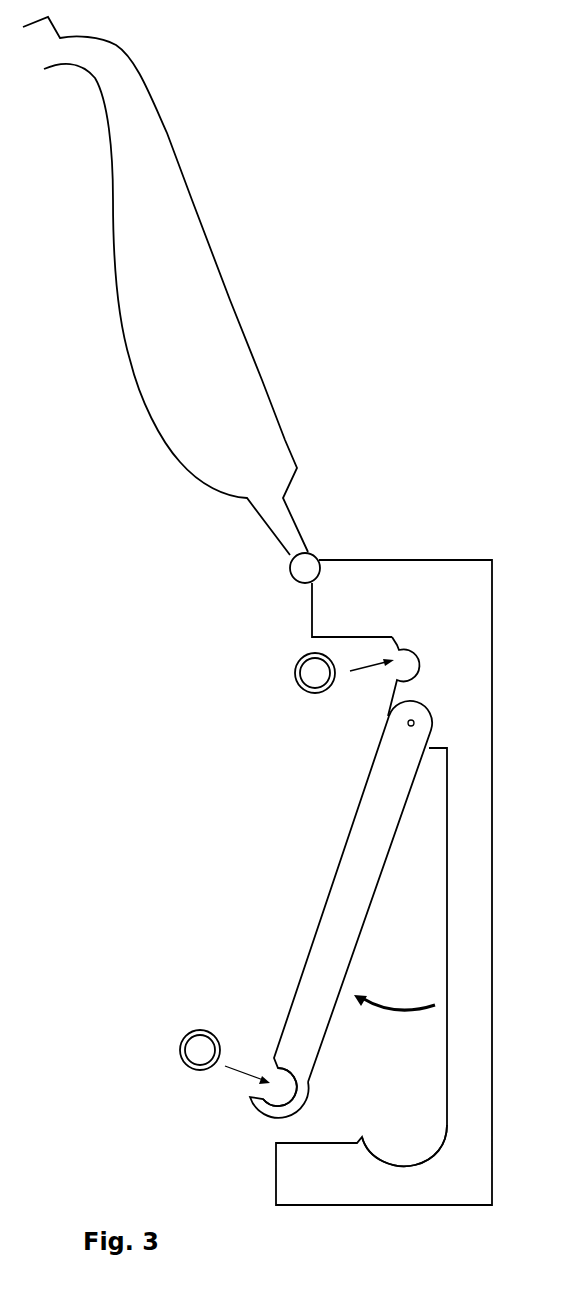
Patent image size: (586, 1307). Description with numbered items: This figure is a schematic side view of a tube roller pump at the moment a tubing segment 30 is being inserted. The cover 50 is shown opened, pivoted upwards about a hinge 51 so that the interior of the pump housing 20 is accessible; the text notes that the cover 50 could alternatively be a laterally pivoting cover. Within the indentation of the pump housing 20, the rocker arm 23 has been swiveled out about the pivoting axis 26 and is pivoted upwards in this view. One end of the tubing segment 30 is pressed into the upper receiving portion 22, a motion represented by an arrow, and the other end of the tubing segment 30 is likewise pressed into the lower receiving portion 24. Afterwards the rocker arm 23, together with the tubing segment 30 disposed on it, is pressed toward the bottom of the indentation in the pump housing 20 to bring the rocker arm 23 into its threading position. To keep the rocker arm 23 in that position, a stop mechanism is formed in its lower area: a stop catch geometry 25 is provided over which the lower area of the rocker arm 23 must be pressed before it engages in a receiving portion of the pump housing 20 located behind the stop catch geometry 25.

The pump housing 20 is at (393, 571).
The upper receiving portion 22 is at (423, 648).
The rocker arm 23 is at (366, 908).
The lower receiving portion 24 is at (297, 1073).
The stop catch geometry 25 is at (370, 1140).
The pivoting axis 26 is at (410, 727).
The tubing segment 30 is at (295, 669).
The cover 50 is at (250, 392).
The hinge 51 is at (300, 568).